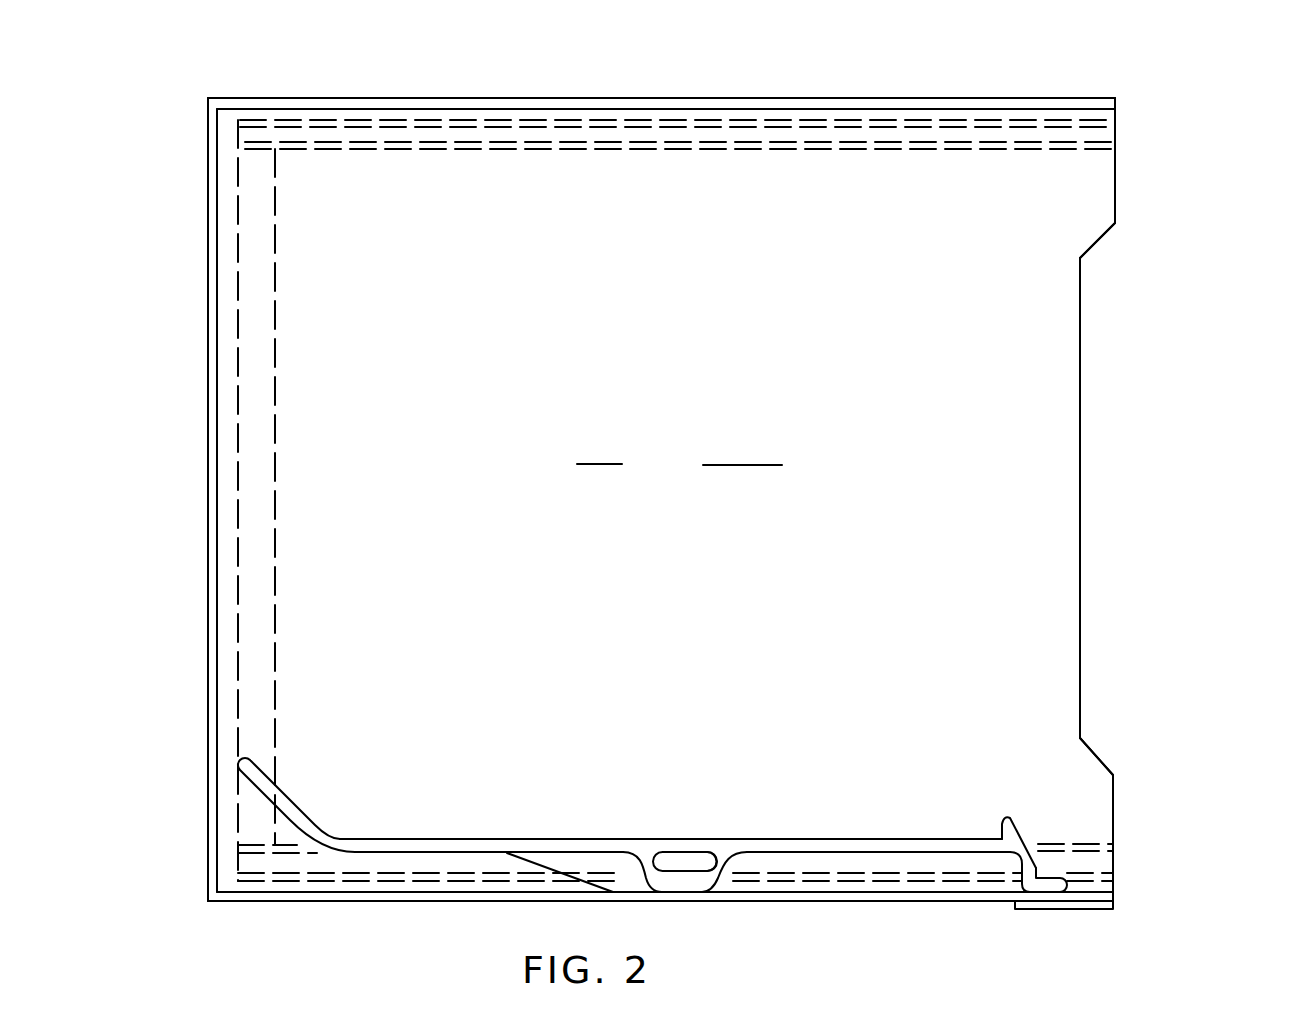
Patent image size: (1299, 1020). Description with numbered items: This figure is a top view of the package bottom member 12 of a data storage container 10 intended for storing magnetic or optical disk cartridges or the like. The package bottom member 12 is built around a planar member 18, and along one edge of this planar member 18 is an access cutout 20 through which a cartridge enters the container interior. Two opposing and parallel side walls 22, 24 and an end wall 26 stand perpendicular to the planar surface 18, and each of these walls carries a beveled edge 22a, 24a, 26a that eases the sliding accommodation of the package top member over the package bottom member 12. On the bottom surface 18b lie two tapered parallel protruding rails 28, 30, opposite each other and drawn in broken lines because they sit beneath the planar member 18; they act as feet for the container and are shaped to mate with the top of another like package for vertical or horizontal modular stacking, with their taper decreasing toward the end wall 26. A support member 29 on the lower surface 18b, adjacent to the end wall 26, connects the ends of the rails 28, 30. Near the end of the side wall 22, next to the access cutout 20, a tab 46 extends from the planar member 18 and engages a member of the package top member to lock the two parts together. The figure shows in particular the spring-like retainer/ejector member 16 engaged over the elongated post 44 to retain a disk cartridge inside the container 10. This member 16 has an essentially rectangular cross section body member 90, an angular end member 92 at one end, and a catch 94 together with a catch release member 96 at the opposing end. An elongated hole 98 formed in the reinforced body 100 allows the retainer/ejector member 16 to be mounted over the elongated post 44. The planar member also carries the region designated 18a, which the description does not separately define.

The data storage container 10 is at (965, 98).
The package bottom member 12 is at (1117, 168).
The retainer/ejector member 16 is at (492, 839).
The planar member 18 is at (599, 448).
The side panel portion 18a is at (742, 448).
The bottom surface 18b is at (1043, 586).
The access cutout 20 is at (1083, 353).
The side wall 22 is at (430, 902).
The beveled edge 22a is at (296, 902).
The side wall 24 is at (428, 98).
The beveled edge 24a is at (590, 108).
The end wall 26 is at (208, 437).
The beveled edge 26a is at (208, 383).
The tapered parallel protruding rail 28 is at (947, 862).
The support member 29 is at (238, 497).
The tapered parallel protruding rail 30 is at (553, 137).
The elongated post 44 is at (683, 860).
The tab 46 is at (1113, 908).
The body member 90 is at (815, 838).
The angular end member 92 is at (258, 778).
The catch 94 is at (1008, 817).
The catch release member 96 is at (1055, 882).
The elongated hole 98 is at (710, 851).
The reinforced body 100 is at (695, 880).